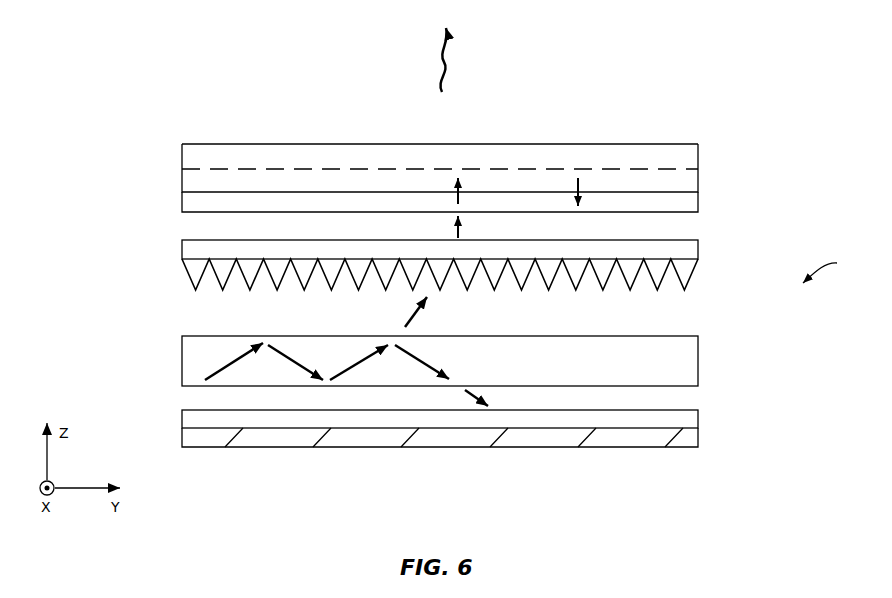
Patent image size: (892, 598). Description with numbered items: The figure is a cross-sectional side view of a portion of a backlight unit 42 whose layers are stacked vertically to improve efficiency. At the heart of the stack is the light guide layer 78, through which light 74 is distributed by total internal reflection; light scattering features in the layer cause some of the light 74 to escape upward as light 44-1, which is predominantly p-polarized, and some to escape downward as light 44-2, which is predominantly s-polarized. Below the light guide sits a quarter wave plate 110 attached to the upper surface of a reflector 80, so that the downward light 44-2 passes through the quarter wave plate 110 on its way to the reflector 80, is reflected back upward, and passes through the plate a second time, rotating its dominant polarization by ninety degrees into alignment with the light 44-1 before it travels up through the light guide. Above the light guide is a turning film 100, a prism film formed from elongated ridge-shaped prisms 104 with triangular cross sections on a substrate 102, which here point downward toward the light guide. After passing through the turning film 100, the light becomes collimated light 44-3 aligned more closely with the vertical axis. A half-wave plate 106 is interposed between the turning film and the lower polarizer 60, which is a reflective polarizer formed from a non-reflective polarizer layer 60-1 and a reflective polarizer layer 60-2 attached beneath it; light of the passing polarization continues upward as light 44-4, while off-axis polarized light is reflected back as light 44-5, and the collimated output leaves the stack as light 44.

The backlight unit 42 is at (830, 271).
The light 44 is at (447, 63).
The light escaping upwards 44-1 is at (418, 314).
The light escaping downwards 44-2 is at (466, 392).
The collimated light 44-3 is at (462, 232).
The light passing through polarizer 44-4 is at (460, 199).
The reflected light 44-5 is at (580, 179).
The lower polarizer 60 is at (420, 143).
The polarizer layer 60-1 is at (233, 155).
The reflective polarizer layer 60-2 is at (303, 175).
The light 74 is at (228, 365).
The light guide layer 78 is at (698, 360).
The reflector 80 is at (438, 435).
The turning film 100 is at (445, 271).
The substrate 102 is at (698, 246).
The prisms 104 is at (662, 272).
The half-wave plate 106 is at (190, 203).
The quarter wave plate 110 is at (698, 420).